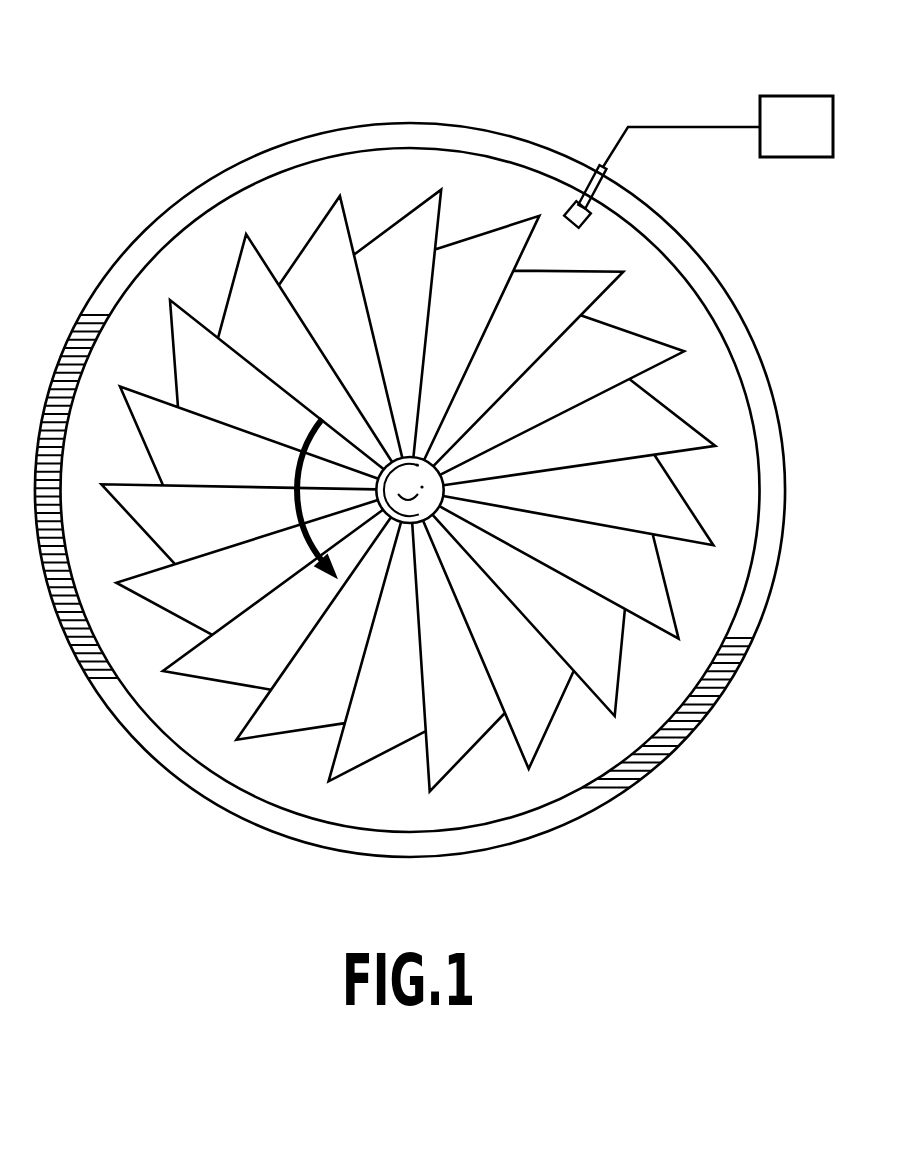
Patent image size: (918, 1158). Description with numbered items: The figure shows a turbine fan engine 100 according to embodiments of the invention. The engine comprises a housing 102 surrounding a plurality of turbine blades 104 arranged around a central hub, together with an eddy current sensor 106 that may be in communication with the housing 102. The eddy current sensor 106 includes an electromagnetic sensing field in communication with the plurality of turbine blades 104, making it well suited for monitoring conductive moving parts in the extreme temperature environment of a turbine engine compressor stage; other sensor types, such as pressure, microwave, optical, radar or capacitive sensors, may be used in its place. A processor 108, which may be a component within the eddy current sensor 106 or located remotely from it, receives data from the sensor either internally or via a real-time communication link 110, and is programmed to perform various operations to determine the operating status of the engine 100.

The turbine fan engine 100 is at (78, 150).
The housing 102 is at (381, 127).
The plurality of turbine blades 104 is at (468, 308).
The eddy current sensor 106 is at (570, 172).
The processor 108 is at (798, 97).
The real-time communication link 110 is at (697, 127).